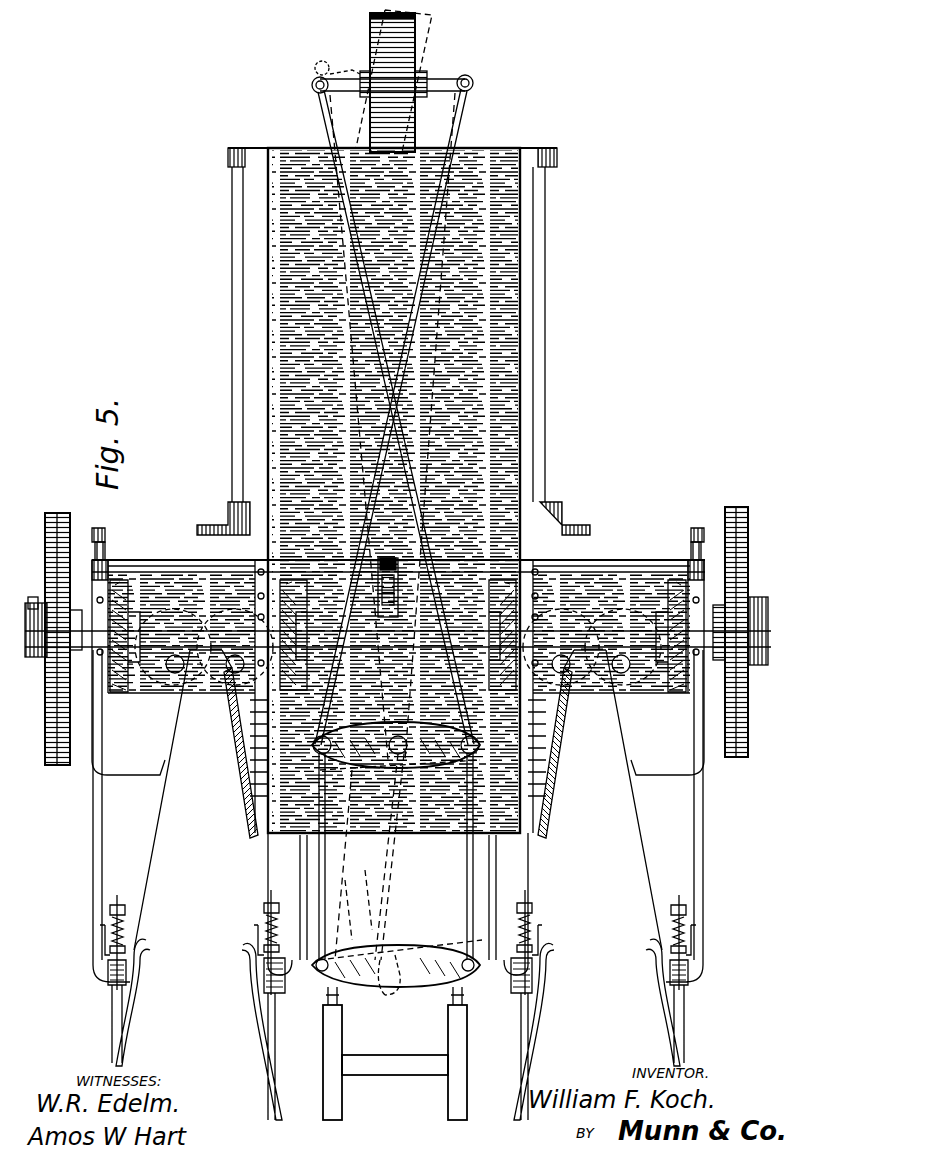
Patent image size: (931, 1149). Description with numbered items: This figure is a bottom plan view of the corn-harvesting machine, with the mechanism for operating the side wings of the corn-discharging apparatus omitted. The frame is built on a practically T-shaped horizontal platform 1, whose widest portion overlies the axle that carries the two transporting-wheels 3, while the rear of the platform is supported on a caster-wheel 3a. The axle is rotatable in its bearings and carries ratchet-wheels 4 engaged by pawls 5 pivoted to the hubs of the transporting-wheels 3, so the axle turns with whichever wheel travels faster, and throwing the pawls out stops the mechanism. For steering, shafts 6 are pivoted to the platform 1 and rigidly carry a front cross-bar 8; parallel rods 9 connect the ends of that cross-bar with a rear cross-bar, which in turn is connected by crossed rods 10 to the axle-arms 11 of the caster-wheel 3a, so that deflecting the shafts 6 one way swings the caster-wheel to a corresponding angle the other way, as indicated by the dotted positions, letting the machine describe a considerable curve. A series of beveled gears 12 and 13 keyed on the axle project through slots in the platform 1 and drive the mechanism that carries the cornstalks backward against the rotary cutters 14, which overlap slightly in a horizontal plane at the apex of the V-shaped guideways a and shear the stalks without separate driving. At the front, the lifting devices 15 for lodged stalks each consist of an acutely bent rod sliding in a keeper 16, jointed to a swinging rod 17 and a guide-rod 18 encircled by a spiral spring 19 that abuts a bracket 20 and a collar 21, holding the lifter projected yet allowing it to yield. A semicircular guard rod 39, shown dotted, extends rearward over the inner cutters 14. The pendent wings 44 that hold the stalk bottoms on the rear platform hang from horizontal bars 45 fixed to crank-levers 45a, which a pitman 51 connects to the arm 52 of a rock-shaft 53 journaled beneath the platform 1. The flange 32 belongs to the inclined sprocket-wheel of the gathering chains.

The horizontal platform 1 is at (512, 160).
The transporting-wheels 3 is at (752, 682).
The rear caster-wheel 3a is at (370, 52).
The ratchet-wheels 4 is at (775, 655).
The pawls 5 is at (30, 606).
The shafts 6 is at (472, 1088).
The front cross-bar 8 is at (352, 996).
The parallel rods 9 is at (395, 857).
The crossed rods 10 is at (326, 112).
The axle-arms 11 is at (350, 78).
The beveled gears 12 is at (110, 600).
The beveled gears 13 is at (284, 585).
The cutters 14 is at (200, 690).
The devices 15 is at (114, 1028).
The keeper 16 is at (96, 975).
The swinging rod 17 is at (126, 950).
The rod 18 is at (117, 900).
The spiral spring 19 is at (110, 930).
The bracket 20 is at (398, 890).
The collar 21 is at (110, 948).
The flange 32 is at (328, 639).
The rod 39 is at (296, 600).
The pendent wings 44 is at (243, 210).
The horizontal bars 45 is at (232, 262).
The crank-levers 45a is at (210, 525).
The pitman 51 is at (704, 505).
The arm 52 is at (100, 528).
The rock-shaft 53 is at (190, 568).
The guideway a is at (384, 826).